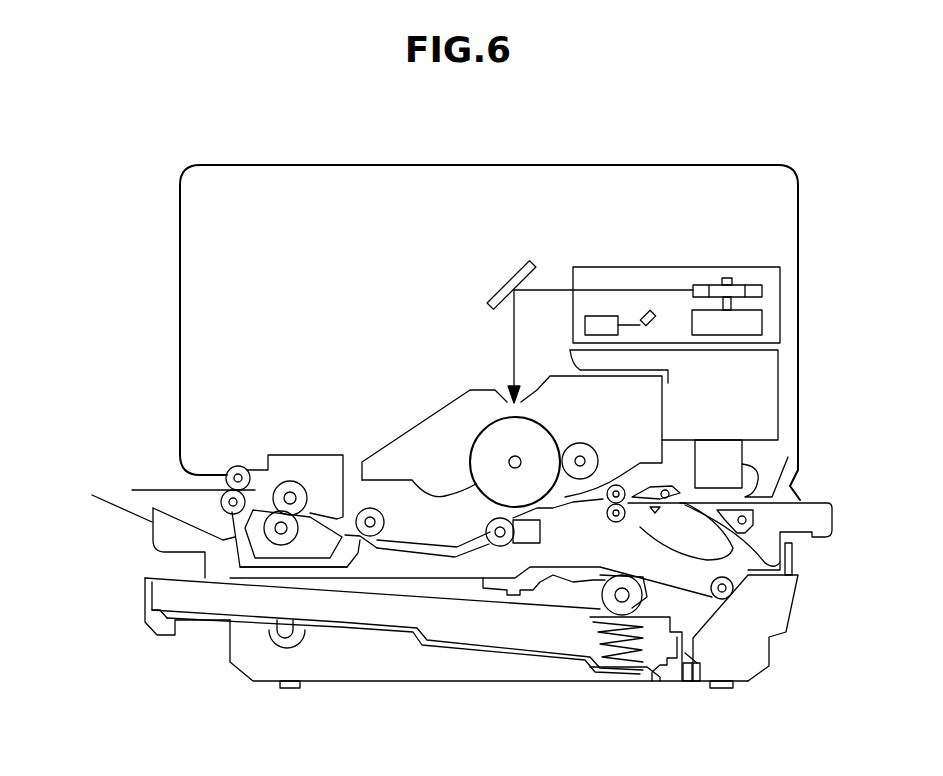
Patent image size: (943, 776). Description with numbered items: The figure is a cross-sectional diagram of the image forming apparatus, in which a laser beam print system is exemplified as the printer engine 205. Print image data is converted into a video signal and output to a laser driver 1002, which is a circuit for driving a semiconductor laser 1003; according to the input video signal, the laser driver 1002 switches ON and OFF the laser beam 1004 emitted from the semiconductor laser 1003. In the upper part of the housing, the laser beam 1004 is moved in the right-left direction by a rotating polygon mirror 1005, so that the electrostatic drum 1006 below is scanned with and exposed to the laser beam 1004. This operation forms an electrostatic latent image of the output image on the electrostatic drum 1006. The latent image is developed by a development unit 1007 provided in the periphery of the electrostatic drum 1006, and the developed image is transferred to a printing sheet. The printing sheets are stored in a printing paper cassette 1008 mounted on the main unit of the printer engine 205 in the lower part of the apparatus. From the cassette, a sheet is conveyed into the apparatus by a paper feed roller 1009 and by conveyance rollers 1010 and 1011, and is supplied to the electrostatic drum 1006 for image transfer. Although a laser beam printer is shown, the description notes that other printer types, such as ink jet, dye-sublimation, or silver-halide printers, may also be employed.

The printer engine 205 is at (471, 164).
The laser driver 1002 is at (585, 322).
The semiconductor laser 1003 is at (655, 326).
The laser beam 1004 is at (632, 290).
The rotating polygon mirror 1005 is at (763, 288).
The electrostatic drum 1006 is at (475, 430).
The development unit 1007 is at (387, 460).
The printing paper cassette 1008 is at (143, 598).
The paper feed roller 1009 is at (601, 593).
The conveyance roller 1010 is at (722, 599).
The conveyance roller 1011 is at (627, 513).